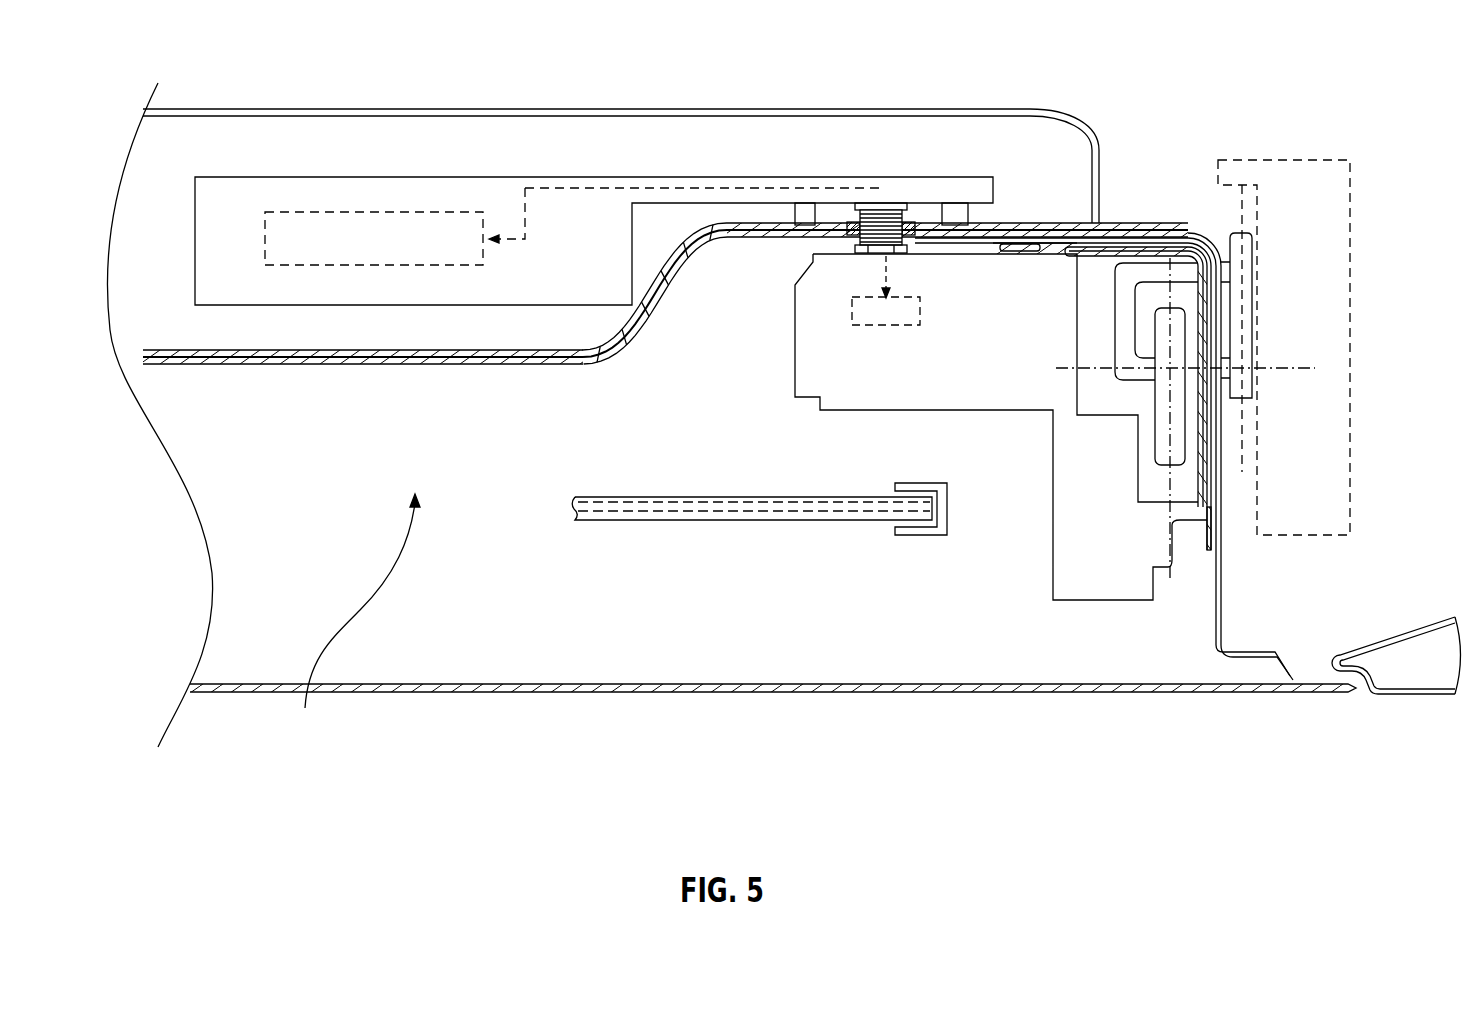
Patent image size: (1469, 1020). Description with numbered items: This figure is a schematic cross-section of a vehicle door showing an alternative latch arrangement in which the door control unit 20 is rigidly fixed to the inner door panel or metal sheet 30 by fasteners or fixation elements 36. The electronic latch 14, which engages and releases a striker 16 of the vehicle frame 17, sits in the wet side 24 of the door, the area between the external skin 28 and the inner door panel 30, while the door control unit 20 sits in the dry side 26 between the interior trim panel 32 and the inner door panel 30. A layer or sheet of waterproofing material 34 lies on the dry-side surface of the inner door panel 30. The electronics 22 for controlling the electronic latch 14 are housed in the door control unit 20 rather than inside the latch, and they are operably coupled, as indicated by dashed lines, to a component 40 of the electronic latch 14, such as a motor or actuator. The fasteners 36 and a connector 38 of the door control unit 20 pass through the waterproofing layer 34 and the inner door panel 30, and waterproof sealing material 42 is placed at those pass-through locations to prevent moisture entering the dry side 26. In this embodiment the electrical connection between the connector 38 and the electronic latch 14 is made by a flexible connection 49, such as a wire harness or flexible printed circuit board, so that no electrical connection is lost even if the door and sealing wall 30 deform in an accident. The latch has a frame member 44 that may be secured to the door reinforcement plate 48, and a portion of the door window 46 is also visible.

The electronic latch 14 is at (1053, 570).
The striker 16 is at (1158, 275).
The vehicle frame 17 is at (1293, 535).
The door control unit 20 is at (245, 177).
The electronics 22 is at (322, 212).
The wet side 24 is at (357, 620).
The dry side 26 is at (552, 139).
The external skin 28 is at (510, 693).
The inner door panel 30 is at (485, 362).
The interior trim panel 32 is at (450, 112).
The layer of waterproofing material 34 is at (410, 363).
The fasteners 36 is at (806, 226).
The connector 38 is at (888, 210).
The component 40 is at (900, 326).
The waterproof sealing material 42 is at (853, 221).
The frame member 44 is at (1197, 478).
The door window 46 is at (621, 521).
The door reinforcement plate 48 is at (1211, 550).
The flexible connection 49 is at (866, 253).